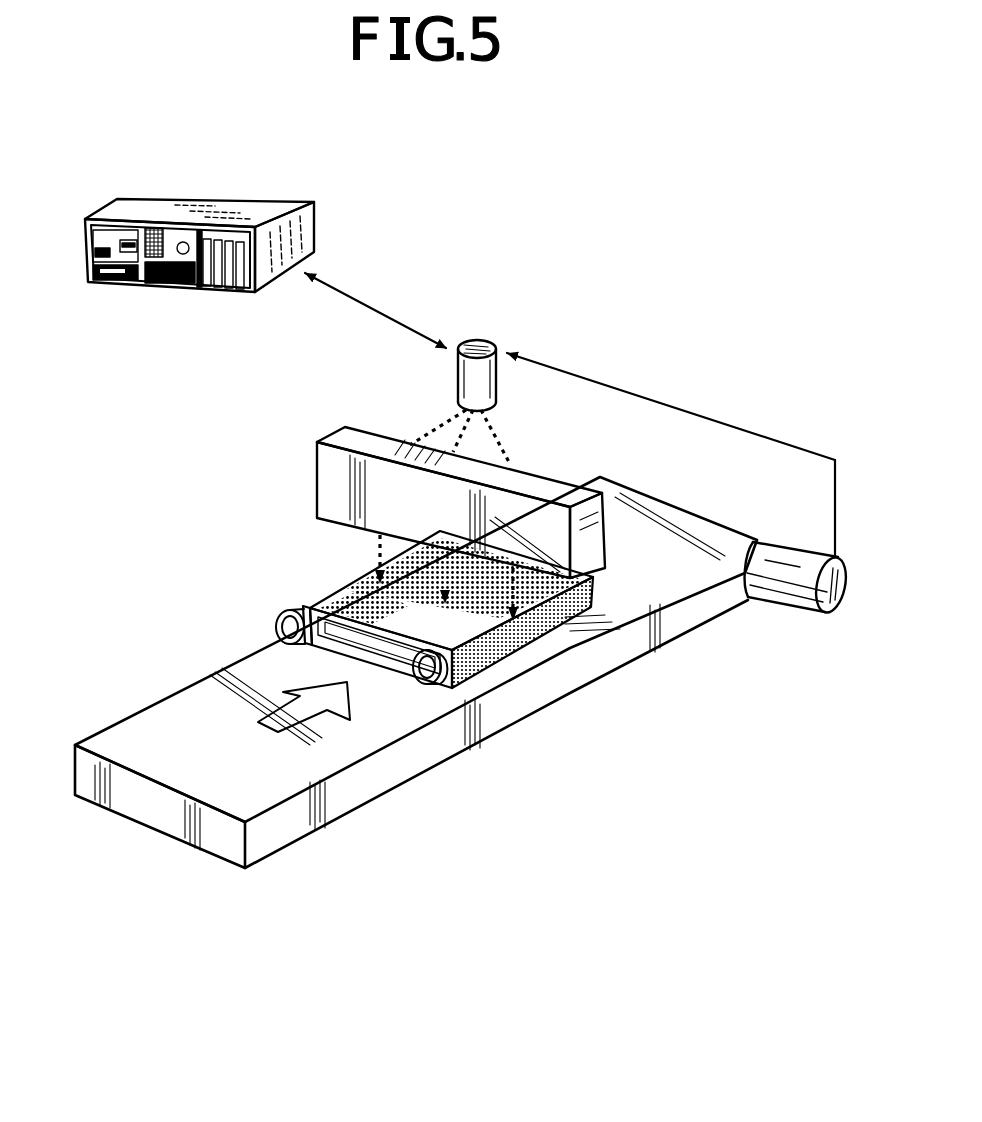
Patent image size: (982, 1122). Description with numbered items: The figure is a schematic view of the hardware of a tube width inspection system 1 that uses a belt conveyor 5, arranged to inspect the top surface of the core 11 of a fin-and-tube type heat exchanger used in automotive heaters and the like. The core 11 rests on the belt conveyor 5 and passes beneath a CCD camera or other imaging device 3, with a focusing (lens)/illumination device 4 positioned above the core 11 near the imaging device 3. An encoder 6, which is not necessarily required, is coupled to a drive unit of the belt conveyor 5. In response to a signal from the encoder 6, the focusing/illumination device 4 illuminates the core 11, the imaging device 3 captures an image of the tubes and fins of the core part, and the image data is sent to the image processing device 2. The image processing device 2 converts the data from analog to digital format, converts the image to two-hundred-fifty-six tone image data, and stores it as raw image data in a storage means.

The inspection system 1 is at (734, 213).
The image processing device 2 is at (243, 213).
The imaging device 3 is at (480, 347).
The focusing/illumination device 4 is at (320, 440).
The belt conveyor 5 is at (128, 797).
The encoder 6 is at (800, 592).
The core 11 is at (457, 623).